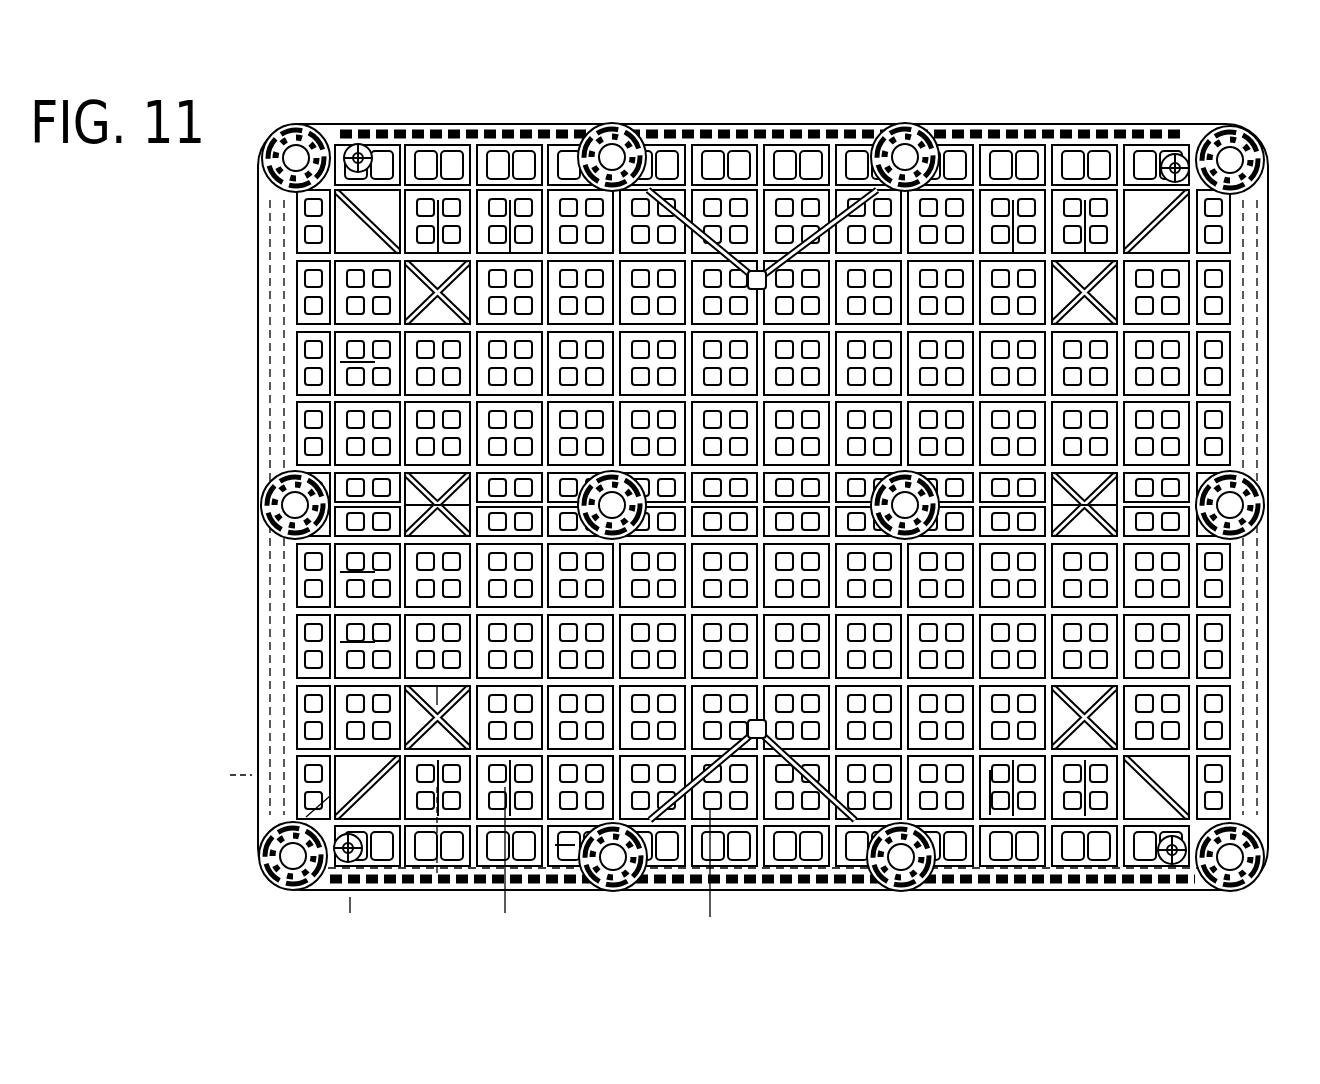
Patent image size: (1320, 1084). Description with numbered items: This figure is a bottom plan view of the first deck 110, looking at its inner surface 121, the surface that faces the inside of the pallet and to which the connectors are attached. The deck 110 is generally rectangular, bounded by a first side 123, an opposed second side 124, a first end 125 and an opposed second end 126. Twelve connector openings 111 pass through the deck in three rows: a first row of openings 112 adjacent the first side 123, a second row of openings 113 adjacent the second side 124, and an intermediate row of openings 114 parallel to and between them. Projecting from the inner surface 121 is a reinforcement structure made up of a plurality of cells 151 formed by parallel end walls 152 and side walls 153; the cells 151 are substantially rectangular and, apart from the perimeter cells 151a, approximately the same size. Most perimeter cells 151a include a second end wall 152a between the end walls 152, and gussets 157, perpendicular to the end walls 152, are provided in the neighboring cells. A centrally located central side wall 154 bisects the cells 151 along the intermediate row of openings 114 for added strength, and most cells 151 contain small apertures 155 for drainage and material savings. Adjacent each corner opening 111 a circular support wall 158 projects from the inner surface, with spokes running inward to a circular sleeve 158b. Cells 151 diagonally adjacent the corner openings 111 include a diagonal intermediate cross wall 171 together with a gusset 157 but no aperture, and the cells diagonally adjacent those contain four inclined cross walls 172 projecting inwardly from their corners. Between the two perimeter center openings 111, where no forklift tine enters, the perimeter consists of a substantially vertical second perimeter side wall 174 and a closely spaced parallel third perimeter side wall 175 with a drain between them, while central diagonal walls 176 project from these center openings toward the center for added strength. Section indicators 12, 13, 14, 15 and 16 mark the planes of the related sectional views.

The first deck 110 is at (843, 112).
The openings 111 is at (912, 128).
The first row of openings 112 is at (242, 160).
The second row of openings 113 is at (240, 862).
The intermediate row of openings 114 is at (240, 493).
The inner surface 121 is at (700, 130).
The first side 123 is at (993, 110).
The second side 124 is at (1004, 897).
The first end 125 is at (178, 530).
The second end 126 is at (1277, 470).
The cells 151 is at (412, 357).
The perimeter cells 151a is at (1082, 140).
The end walls 152 is at (486, 210).
The second end wall 152a is at (440, 820).
The side walls 153 is at (738, 185).
The central side wall 154 is at (365, 490).
The apertures 155 is at (368, 641).
The gussets 157 is at (342, 148).
The circular support wall 158 is at (1180, 160).
The circular sleeve 158b is at (332, 860).
The diagonal intermediate cross wall 171 is at (378, 218).
The inclined cross walls 172 is at (440, 293).
The second perimeter side wall 174 is at (678, 890).
The third perimeter side wall 175 is at (790, 880).
The central diagonal walls 176 is at (847, 820).
The section line 12 is at (310, 812).
The section line 13 is at (227, 754).
The section line 14 is at (459, 692).
The section line 15 is at (695, 817).
The section line 16 is at (534, 760).